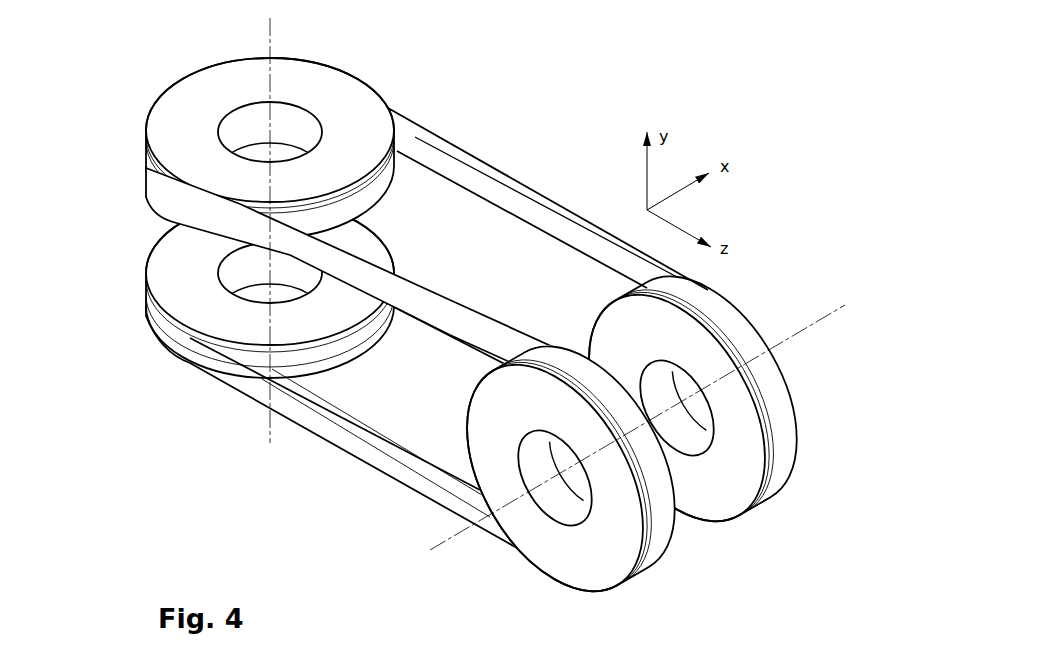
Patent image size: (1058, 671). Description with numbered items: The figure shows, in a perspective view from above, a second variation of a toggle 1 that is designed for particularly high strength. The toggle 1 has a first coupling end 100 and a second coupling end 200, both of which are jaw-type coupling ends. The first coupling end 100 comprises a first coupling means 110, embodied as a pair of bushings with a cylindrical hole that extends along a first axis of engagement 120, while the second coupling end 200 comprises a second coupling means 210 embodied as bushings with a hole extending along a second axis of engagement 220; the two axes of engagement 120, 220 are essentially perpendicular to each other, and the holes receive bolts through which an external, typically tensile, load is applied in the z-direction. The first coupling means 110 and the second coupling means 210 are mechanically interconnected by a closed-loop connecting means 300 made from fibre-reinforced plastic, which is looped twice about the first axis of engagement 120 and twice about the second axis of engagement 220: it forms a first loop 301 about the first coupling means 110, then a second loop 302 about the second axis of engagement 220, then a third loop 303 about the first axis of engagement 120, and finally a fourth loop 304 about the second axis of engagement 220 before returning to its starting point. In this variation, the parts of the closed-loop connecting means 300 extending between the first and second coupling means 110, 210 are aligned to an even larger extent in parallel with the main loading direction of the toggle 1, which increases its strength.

The toggle 1 is at (498, 317).
The first coupling end 100 is at (689, 411).
The first coupling means 110 is at (803, 438).
The first axis of engagement 120 is at (838, 308).
The second coupling end 200 is at (222, 245).
The second coupling means 210 is at (203, 118).
The second axis of engagement 220 is at (272, 72).
The closed-loop connecting means 300 is at (379, 285).
The first loop 301 is at (773, 407).
The second loop 302 is at (180, 335).
The third loop 303 is at (660, 537).
The fourth loop 304 is at (185, 207).